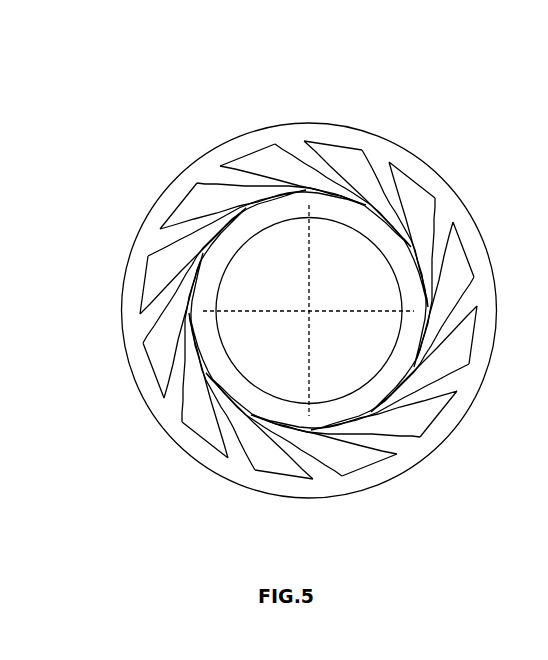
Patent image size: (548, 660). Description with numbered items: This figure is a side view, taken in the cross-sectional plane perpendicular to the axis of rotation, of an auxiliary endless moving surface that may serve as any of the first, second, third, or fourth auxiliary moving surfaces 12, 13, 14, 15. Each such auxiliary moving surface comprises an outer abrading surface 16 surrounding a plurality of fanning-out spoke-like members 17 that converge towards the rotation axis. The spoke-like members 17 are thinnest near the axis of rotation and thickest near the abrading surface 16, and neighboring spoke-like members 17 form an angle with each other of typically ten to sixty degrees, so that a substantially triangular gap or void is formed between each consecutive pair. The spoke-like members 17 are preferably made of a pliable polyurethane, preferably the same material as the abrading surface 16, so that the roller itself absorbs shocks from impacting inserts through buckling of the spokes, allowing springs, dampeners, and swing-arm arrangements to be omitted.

The first auxiliary moving surface 12 is at (148, 139).
The second auxiliary moving surface 13 is at (364, 371).
The third auxiliary moving surface 14 is at (228, 343).
The fourth auxiliary moving surface 15 is at (275, 229).
The outer abrading surface 16 is at (397, 145).
The spoke-like members 17 is at (397, 445).